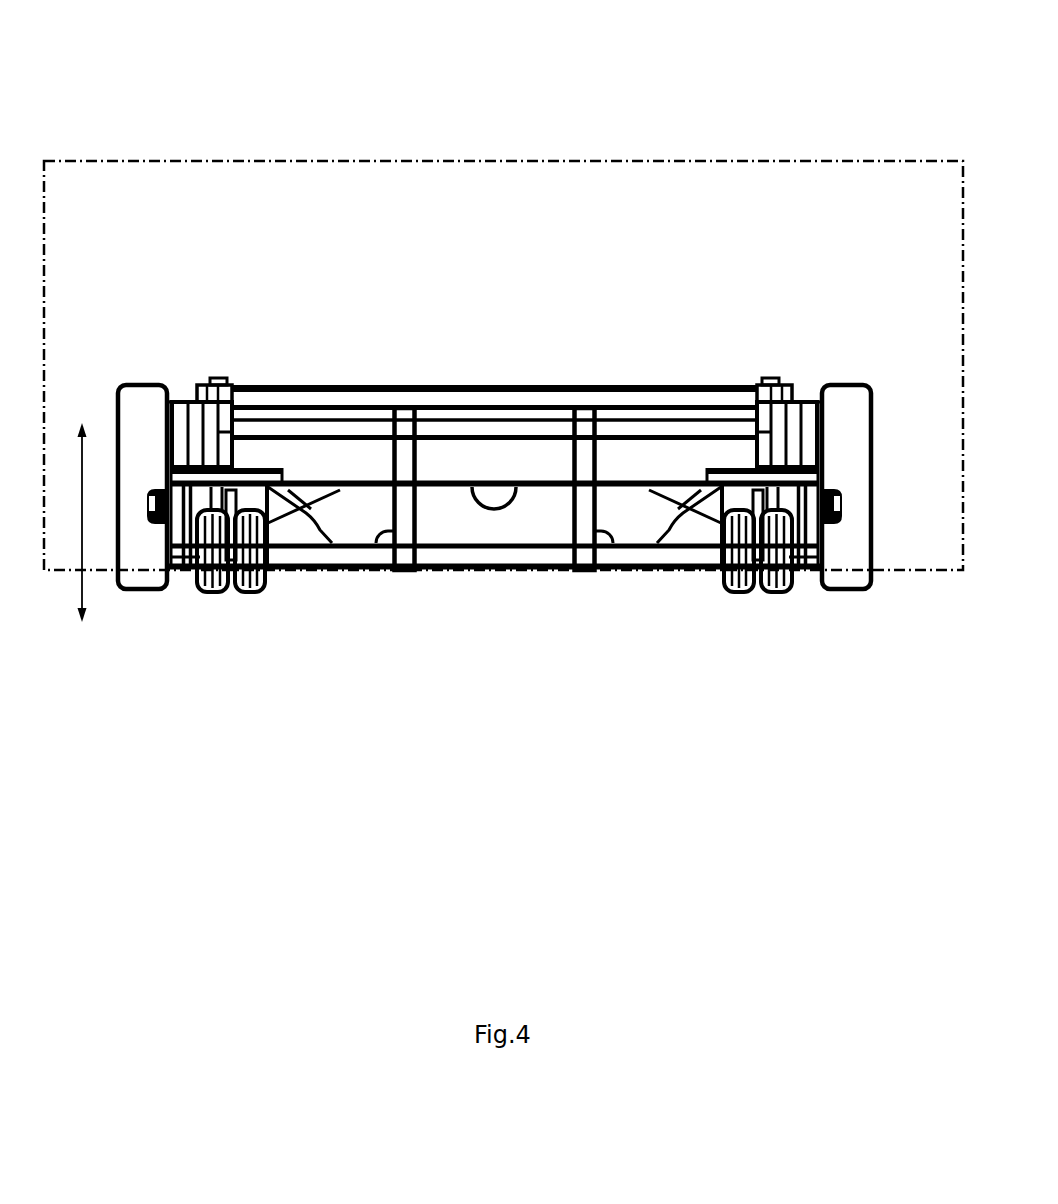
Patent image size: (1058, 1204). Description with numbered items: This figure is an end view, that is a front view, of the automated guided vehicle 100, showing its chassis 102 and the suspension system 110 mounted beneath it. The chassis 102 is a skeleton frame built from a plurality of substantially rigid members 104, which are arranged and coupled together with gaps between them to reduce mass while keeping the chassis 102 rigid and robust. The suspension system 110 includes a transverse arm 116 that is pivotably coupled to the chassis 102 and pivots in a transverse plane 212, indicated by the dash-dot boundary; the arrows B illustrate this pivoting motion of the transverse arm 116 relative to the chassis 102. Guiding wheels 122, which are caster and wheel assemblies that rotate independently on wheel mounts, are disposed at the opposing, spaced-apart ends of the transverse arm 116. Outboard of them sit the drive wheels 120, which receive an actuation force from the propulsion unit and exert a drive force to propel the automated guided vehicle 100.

The automated guided vehicle 100 is at (316, 101).
The chassis 102 is at (674, 356).
The members 104 is at (368, 400).
The suspension system 110 is at (528, 581).
The transverse arm 116 is at (483, 520).
The drive wheel 120 is at (146, 524).
The guiding wheels 122 is at (238, 552).
The transverse plane 212 is at (545, 240).